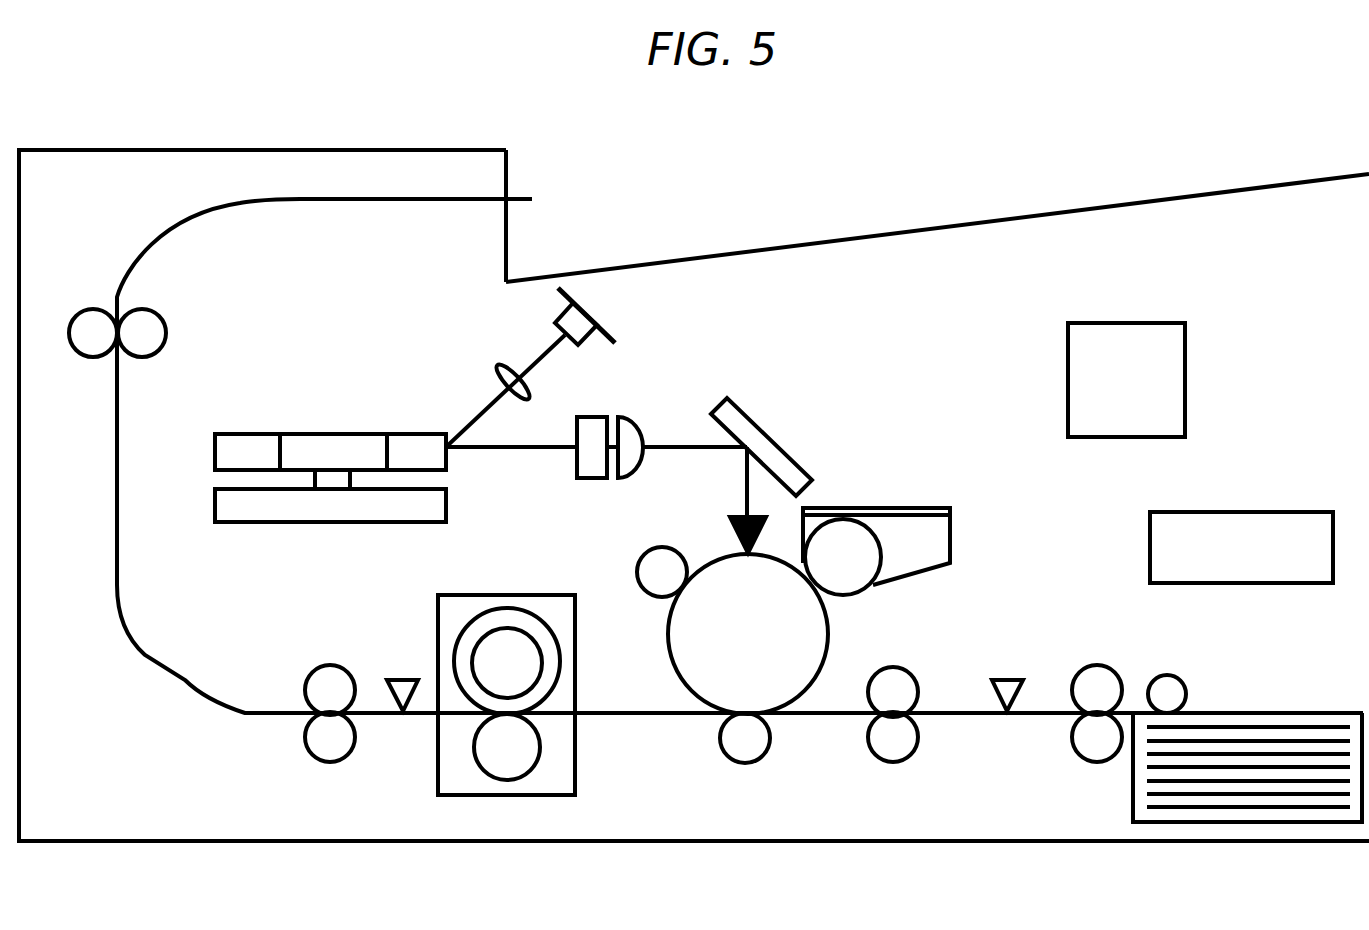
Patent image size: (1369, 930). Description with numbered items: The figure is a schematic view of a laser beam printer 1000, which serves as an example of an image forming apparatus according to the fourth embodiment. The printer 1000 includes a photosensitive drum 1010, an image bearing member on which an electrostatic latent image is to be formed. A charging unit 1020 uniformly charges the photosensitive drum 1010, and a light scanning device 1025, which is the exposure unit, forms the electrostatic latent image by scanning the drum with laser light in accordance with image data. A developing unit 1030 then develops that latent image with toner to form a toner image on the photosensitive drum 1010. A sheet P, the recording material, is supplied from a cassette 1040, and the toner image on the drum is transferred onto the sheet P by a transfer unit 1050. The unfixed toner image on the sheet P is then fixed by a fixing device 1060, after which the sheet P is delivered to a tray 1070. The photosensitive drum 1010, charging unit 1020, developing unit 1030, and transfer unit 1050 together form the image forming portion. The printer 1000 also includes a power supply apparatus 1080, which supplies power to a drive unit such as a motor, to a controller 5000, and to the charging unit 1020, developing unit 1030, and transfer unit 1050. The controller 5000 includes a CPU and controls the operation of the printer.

The laser beam printer 1000 is at (706, 845).
The photosensitive drum 1010 is at (663, 633).
The charging unit 1020 is at (637, 562).
The light scanning device 1025 is at (241, 432).
The developing unit 1030 is at (950, 520).
The cassette 1040 is at (1247, 786).
The transfer unit 1050 is at (731, 760).
The fixing device 1060 is at (438, 767).
The tray 1070 is at (725, 250).
The power supply apparatus 1080 is at (1230, 512).
The controller 5000 is at (1185, 388).
The sheet P is at (1196, 812).